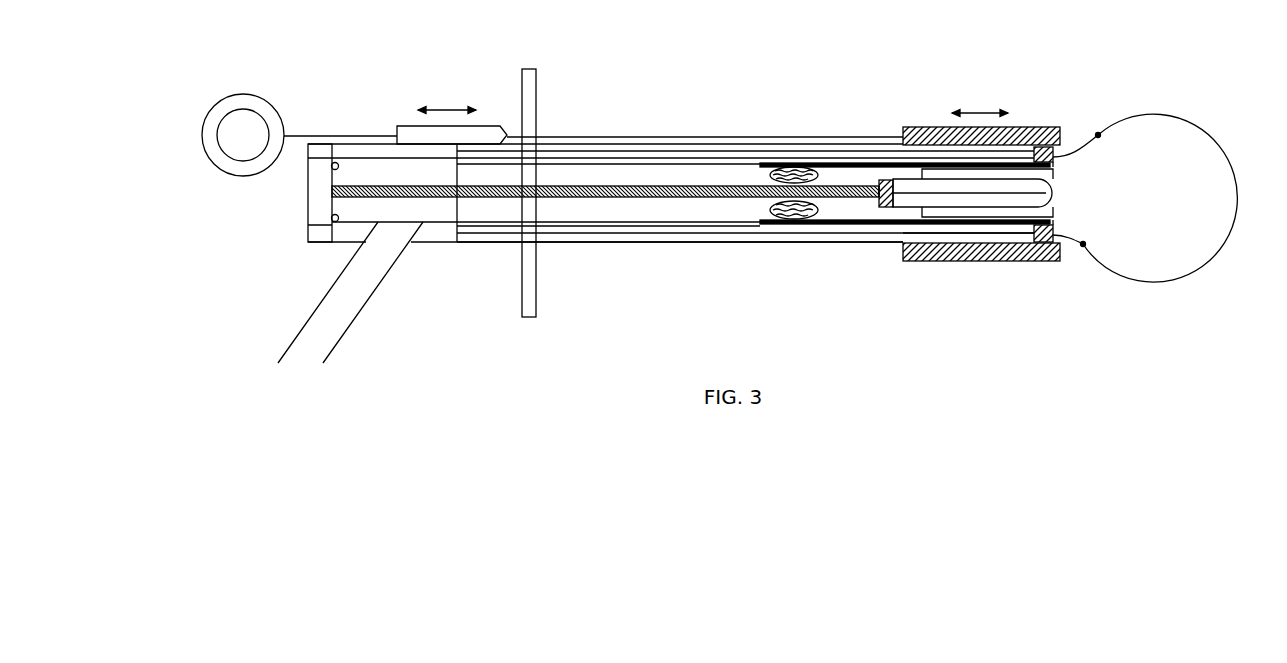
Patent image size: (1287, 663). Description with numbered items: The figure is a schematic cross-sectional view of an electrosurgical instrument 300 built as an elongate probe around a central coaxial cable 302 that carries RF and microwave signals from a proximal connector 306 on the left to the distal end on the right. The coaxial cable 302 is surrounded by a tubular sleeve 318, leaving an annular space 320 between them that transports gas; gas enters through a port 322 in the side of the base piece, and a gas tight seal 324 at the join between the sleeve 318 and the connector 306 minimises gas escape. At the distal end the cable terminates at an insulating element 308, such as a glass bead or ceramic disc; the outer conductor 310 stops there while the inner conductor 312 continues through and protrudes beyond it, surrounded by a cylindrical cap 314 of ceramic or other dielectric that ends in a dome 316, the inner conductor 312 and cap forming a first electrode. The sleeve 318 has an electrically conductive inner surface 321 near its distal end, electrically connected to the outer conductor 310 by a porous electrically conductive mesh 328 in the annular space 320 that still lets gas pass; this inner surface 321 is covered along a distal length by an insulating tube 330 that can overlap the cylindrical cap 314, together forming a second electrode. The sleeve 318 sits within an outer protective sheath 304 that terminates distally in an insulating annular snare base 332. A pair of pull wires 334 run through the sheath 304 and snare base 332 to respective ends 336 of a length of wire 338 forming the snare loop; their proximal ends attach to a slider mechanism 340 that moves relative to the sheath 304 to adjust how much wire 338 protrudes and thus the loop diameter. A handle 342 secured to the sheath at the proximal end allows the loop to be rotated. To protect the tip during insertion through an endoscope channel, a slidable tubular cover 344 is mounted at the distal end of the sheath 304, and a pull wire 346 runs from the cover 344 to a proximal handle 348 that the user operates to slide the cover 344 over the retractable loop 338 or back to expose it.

The electrosurgical instrument 300 is at (1078, 48).
The coaxial cable 302 is at (640, 186).
The outer protective sheath 304 is at (582, 242).
The connector 306 is at (315, 195).
The insulating element 308 is at (888, 180).
The outer conductor 310 is at (865, 200).
The inner conductor 312 is at (930, 217).
The cylindrical cap 314 is at (1040, 185).
The dome 316 is at (1052, 196).
The tubular sleeve 318 is at (367, 160).
The annular space 320 is at (733, 173).
The electrically conductive inner surface 321 is at (828, 173).
The port 322 is at (358, 322).
The gas tight seal 324 is at (334, 223).
The electrically conductive mesh 328 is at (798, 223).
The insulating tube 330 is at (997, 227).
The annular snare base 332 is at (1062, 236).
The pull wires 334 is at (572, 151).
The ends of the length of wire 336 is at (1098, 135).
The length of wire 338 is at (1192, 268).
The slider mechanism 340 is at (484, 135).
The handle 342 is at (527, 298).
The slidable tubular cover 344 is at (955, 262).
The pull wire 346 is at (710, 137).
The handle 348 is at (204, 146).